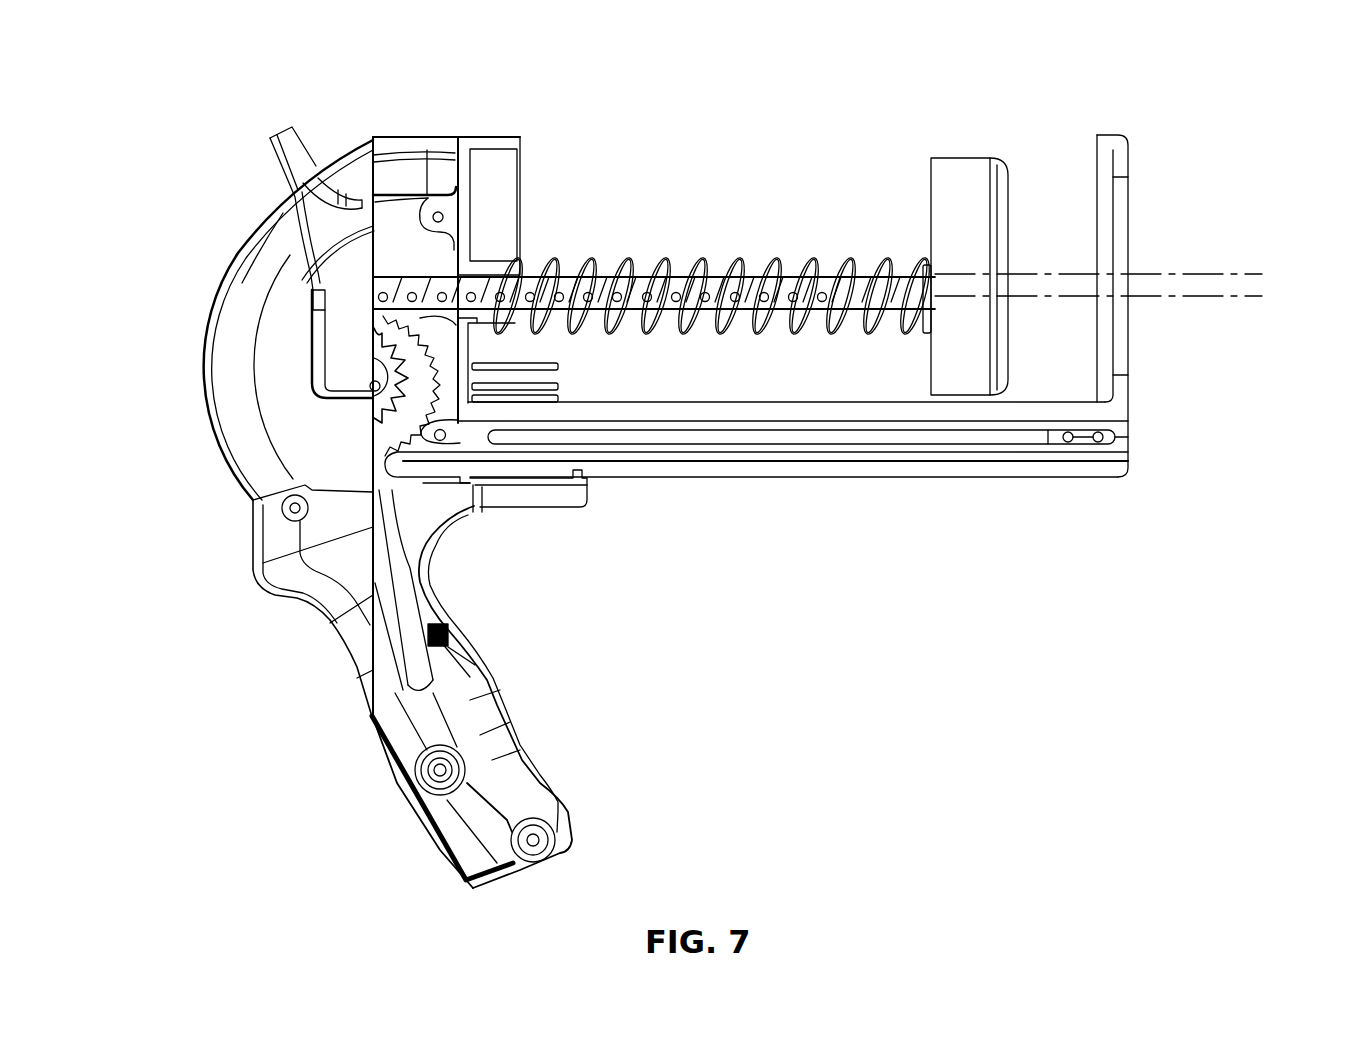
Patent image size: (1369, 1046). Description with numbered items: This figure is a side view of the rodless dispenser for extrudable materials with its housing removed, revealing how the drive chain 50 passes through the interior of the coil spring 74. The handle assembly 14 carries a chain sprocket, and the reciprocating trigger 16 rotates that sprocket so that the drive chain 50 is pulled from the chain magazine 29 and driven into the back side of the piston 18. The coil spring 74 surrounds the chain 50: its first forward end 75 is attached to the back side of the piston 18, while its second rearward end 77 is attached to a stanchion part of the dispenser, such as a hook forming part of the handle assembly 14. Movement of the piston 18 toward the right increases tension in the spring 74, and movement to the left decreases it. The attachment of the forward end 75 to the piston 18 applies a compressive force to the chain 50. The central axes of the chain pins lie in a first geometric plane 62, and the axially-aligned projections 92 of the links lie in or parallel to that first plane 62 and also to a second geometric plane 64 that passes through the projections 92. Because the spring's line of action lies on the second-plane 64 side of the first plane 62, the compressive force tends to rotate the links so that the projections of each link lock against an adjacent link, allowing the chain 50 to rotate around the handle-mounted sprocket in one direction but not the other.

The handle assembly 14 is at (157, 905).
The reciprocating trigger 16 is at (478, 648).
The piston 18 is at (955, 158).
The chain magazine 29 is at (1044, 480).
The drive chain 50 is at (720, 262).
The first geometric plane 62 is at (1245, 296).
The second geometric plane 64 is at (1262, 272).
The coil spring 74 is at (660, 262).
The first forward end 75 is at (931, 250).
The second rearward end 77 is at (518, 264).
The axially-aligned projections 92 is at (603, 262).